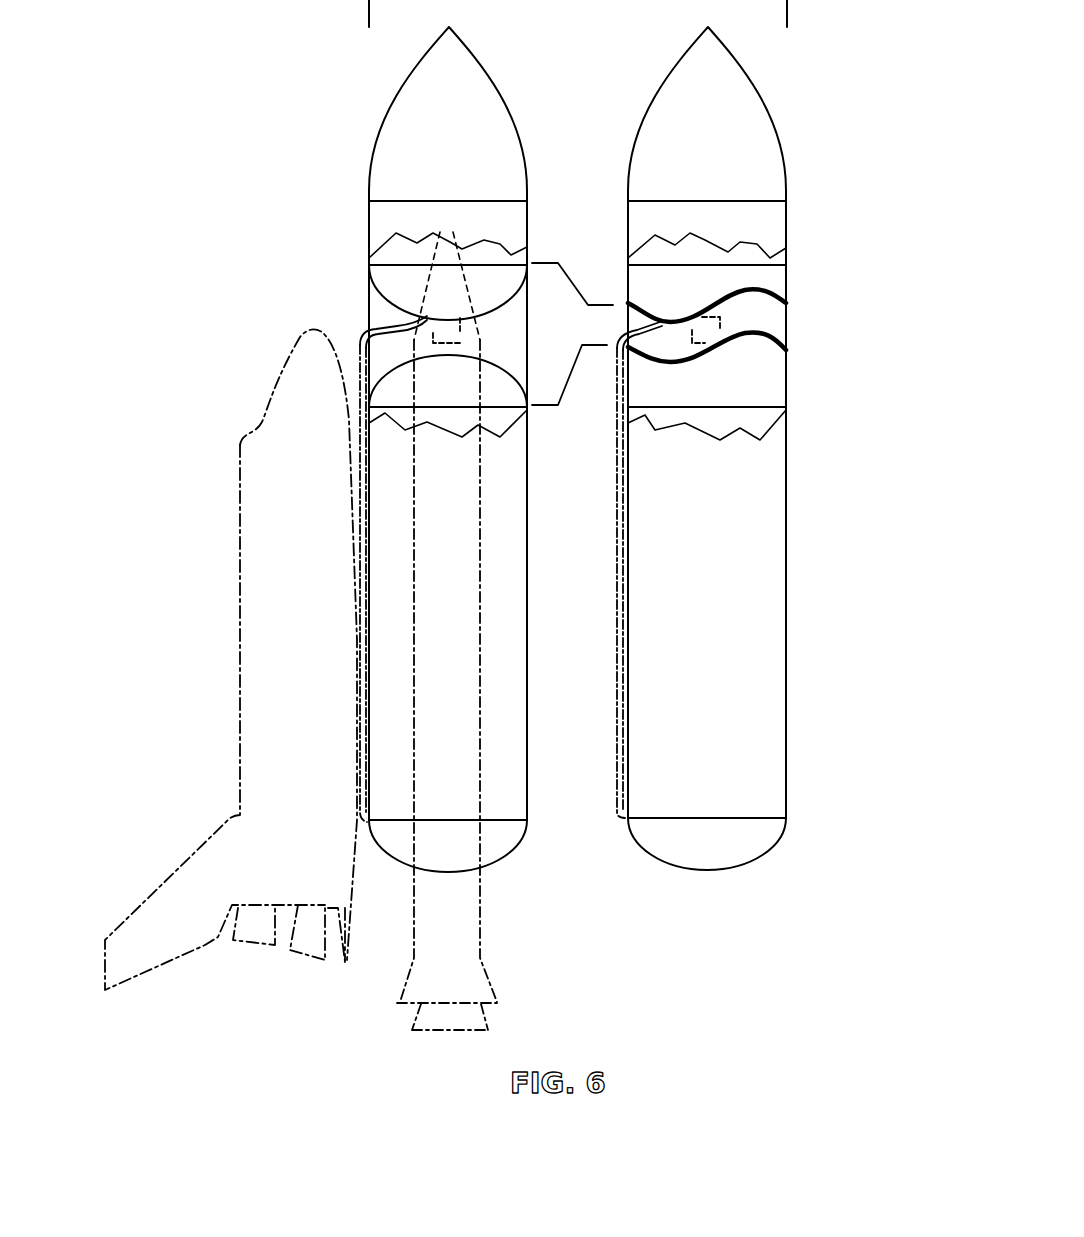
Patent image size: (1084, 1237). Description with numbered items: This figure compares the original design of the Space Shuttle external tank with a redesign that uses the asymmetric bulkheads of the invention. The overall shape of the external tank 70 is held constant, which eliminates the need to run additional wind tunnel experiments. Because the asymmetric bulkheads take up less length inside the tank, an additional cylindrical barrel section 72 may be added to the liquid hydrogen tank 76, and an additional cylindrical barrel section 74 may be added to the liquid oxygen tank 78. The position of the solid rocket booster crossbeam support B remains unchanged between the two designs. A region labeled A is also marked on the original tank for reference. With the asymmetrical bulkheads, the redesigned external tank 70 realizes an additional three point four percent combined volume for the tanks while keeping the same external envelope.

The external tank 70 is at (838, 231).
The additional cylindrical barrel section 72 is at (787, 277).
The additional cylindrical barrel section 74 is at (787, 392).
The liquid hydrogen tank 76 is at (707, 297).
The liquid oxygen tank 78 is at (707, 367).
The detail A region A is at (447, 276).
The solid rocket booster crossbeam support B is at (720, 322).